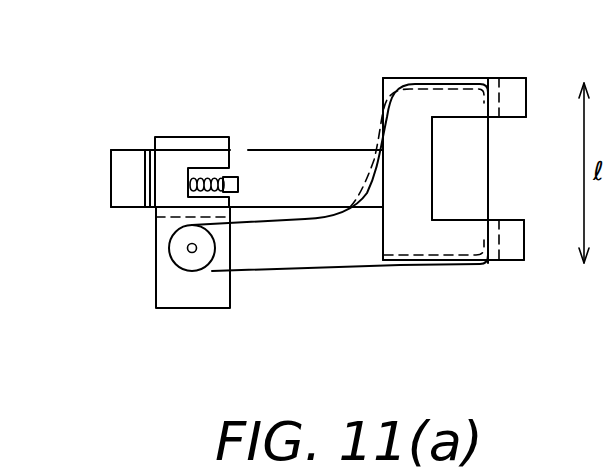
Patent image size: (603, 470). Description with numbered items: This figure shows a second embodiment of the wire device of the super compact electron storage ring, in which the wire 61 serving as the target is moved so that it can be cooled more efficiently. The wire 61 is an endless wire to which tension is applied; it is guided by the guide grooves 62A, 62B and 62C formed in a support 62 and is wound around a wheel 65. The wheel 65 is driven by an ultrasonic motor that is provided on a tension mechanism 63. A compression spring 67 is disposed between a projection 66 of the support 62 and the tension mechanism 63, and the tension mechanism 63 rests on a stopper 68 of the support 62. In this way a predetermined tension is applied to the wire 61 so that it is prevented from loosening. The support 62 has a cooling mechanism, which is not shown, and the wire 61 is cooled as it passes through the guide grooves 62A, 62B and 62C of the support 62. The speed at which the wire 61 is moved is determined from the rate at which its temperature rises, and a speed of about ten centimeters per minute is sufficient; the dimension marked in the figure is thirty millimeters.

The wire 61 is at (489, 167).
The support 62 is at (527, 79).
The guide groove 62A is at (492, 77).
The guide groove 62B is at (490, 262).
The guide groove 62C is at (382, 148).
The tension mechanism 63 is at (202, 295).
The wheel 65 is at (176, 252).
The projection 66 is at (236, 176).
The compression spring 67 is at (208, 177).
The stopper 68 is at (141, 178).